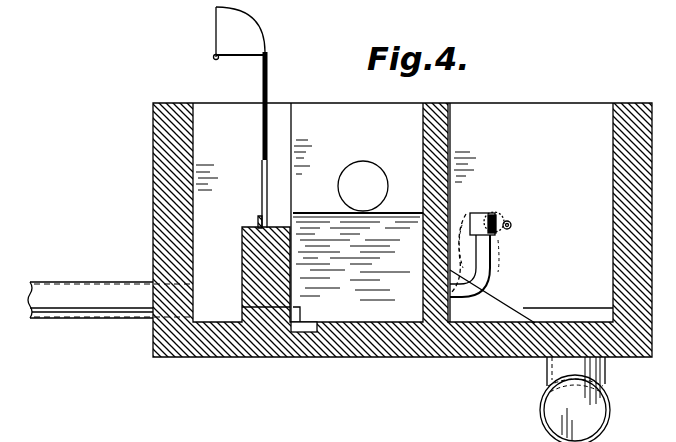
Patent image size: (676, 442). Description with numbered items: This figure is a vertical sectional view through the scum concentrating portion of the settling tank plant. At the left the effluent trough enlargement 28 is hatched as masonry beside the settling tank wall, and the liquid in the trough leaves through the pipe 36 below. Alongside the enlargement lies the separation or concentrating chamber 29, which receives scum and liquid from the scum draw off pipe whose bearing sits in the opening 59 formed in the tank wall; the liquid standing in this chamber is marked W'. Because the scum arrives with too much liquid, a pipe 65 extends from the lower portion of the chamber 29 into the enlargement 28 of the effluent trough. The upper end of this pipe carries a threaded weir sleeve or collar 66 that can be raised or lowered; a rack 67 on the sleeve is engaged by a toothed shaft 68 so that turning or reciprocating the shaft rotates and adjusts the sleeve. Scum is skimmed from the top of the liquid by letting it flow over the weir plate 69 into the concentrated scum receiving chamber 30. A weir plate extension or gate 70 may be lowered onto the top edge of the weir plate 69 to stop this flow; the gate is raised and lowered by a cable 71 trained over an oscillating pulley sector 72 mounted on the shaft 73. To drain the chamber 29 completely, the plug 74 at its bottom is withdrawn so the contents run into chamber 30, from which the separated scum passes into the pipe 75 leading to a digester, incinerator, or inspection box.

The effluent trough enlargement 28 is at (545, 163).
The separation or concentrating chamber 29 is at (358, 143).
The concentrated scum receiving chamber 30 is at (224, 275).
The pipe 36 is at (546, 420).
The opening 59 is at (384, 174).
The pipe 65 is at (489, 274).
The threaded weir sleeve or collar 66 is at (467, 212).
The rack 67 is at (497, 220).
The toothed shaft 68 is at (512, 225).
The weir plate 69 is at (258, 217).
The weir plate extension or gate 70 is at (262, 175).
The cable 71 is at (262, 81).
The oscillating pulley sector 72 is at (216, 33).
The shaft 73 is at (214, 59).
The plug 74 is at (300, 312).
The pipe 75 is at (98, 282).
The water level W' is at (310, 200).